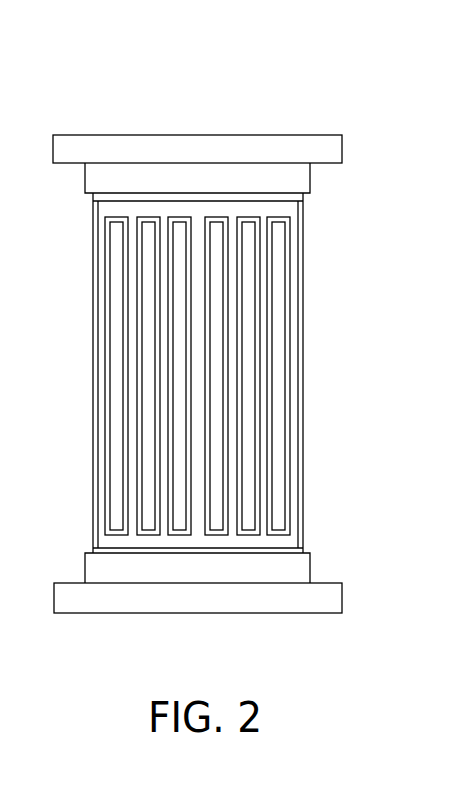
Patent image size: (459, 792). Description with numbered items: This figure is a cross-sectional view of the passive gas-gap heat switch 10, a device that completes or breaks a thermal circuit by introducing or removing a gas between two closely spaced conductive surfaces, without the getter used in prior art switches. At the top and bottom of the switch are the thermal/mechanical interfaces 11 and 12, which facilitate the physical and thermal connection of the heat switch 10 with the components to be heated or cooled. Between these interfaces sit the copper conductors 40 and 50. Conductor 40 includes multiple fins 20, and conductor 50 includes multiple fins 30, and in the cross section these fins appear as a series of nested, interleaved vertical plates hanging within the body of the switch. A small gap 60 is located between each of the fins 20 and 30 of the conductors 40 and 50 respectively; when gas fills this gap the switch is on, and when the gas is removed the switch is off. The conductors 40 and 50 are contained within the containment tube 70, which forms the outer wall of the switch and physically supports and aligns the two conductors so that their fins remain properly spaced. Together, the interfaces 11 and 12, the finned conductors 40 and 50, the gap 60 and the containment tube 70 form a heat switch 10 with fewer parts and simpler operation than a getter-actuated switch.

The passive gas-gap heat switch 10 is at (198, 82).
The thermal/mechanical interface 11 is at (322, 140).
The thermal/mechanical interface 12 is at (82, 607).
The fins 20 is at (128, 334).
The fins 30 is at (113, 370).
The copper conductor 40 is at (115, 210).
The copper conductor 50 is at (290, 542).
The gap 60 is at (125, 428).
The containment tube 70 is at (302, 323).